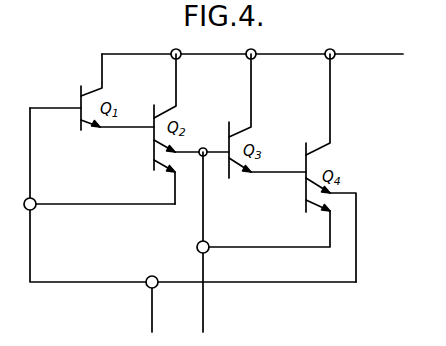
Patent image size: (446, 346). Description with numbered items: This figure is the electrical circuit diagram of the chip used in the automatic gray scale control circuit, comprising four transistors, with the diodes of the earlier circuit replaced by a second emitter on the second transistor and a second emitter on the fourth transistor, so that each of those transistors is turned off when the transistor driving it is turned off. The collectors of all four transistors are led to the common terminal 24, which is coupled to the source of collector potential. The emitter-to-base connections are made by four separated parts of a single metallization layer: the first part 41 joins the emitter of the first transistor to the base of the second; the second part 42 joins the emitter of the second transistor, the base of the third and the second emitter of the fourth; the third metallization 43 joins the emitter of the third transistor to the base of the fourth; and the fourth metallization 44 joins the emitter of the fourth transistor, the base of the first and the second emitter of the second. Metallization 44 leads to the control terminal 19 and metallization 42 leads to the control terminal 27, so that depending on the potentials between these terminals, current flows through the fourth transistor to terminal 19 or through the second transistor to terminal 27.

The control terminal 19 is at (152, 276).
The common terminal 24 is at (334, 58).
The control terminal 27 is at (208, 252).
The first part of the metallization 41 is at (118, 129).
The second part of the metallization 42 is at (212, 147).
The third metallization 43 is at (287, 170).
The fourth metallization 44 is at (60, 206).